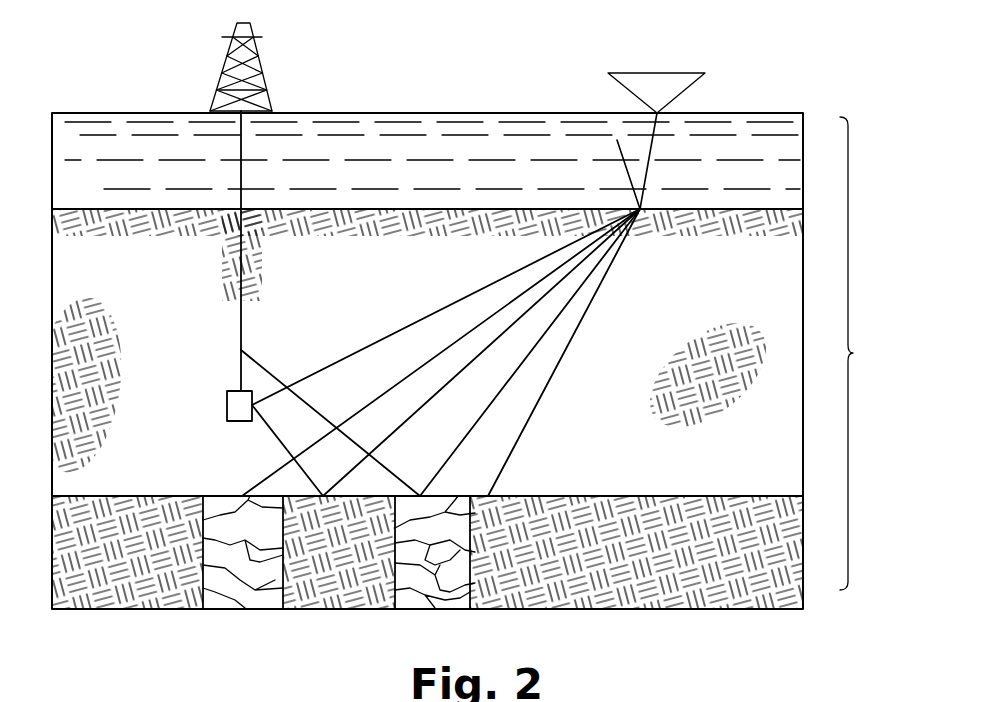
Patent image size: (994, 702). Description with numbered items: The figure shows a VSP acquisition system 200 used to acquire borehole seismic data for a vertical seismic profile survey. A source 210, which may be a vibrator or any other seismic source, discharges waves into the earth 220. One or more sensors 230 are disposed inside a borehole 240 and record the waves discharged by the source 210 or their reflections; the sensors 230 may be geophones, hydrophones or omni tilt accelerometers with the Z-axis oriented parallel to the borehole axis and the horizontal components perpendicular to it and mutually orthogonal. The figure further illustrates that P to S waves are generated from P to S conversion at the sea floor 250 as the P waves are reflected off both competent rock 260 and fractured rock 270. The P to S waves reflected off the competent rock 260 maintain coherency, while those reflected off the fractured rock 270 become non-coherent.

The VSP acquisition system 200 is at (295, 58).
The source 210 is at (670, 73).
The earth 220 is at (872, 353).
The sensors 230 is at (227, 405).
The borehole 240 is at (240, 323).
The sea floor 250 is at (803, 496).
The competent rock 260 is at (140, 610).
The fractured rock 270 is at (232, 610).